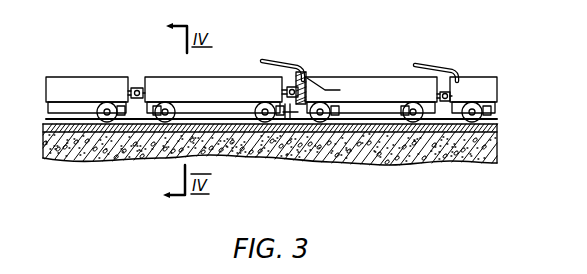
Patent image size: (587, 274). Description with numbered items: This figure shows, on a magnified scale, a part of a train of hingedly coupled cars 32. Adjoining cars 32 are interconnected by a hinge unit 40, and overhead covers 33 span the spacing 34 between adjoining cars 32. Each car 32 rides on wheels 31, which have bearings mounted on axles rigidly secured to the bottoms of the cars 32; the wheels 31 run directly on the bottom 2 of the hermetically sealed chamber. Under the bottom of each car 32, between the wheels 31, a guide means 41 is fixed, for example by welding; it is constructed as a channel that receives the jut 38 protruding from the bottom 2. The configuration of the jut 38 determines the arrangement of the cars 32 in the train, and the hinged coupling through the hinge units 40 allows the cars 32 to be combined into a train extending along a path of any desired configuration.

The bottom 2 is at (492, 127).
The wheels 31 is at (102, 106).
The cars 32 is at (165, 85).
The overhead covers 33 is at (273, 62).
The spacing 34 is at (443, 84).
The jut 38 is at (292, 115).
The hinge unit 40 is at (293, 83).
The guide means 41 is at (205, 113).